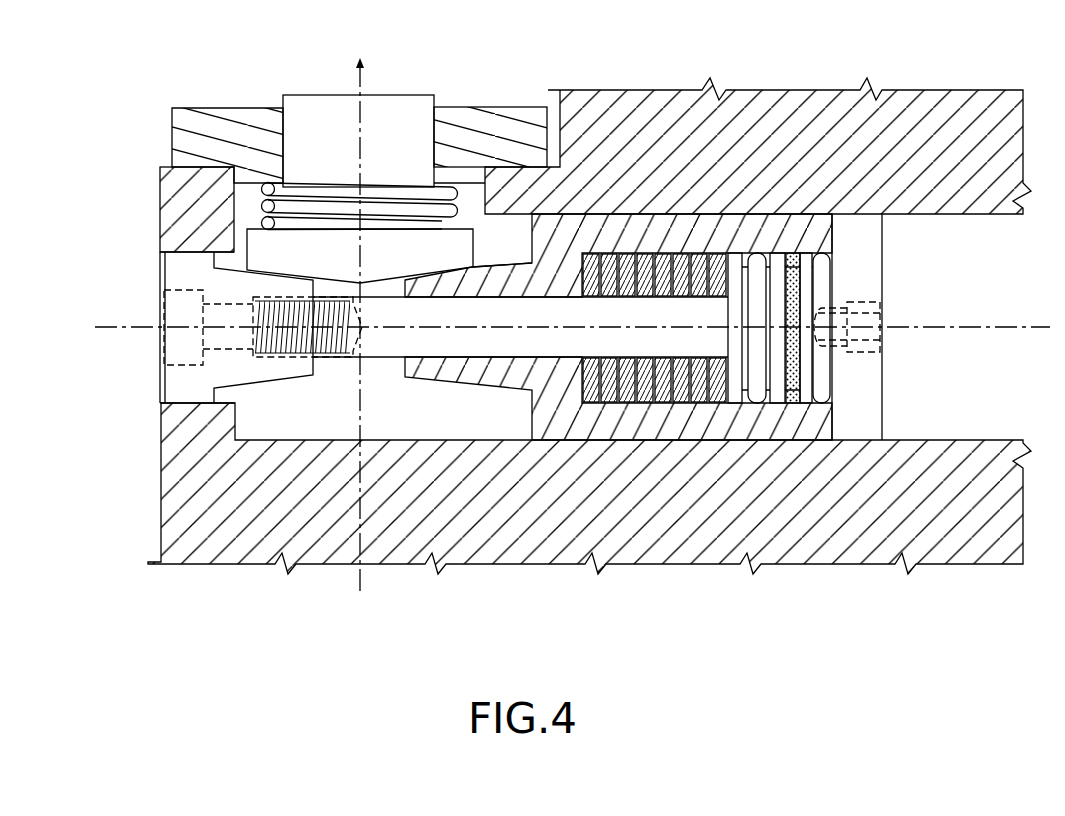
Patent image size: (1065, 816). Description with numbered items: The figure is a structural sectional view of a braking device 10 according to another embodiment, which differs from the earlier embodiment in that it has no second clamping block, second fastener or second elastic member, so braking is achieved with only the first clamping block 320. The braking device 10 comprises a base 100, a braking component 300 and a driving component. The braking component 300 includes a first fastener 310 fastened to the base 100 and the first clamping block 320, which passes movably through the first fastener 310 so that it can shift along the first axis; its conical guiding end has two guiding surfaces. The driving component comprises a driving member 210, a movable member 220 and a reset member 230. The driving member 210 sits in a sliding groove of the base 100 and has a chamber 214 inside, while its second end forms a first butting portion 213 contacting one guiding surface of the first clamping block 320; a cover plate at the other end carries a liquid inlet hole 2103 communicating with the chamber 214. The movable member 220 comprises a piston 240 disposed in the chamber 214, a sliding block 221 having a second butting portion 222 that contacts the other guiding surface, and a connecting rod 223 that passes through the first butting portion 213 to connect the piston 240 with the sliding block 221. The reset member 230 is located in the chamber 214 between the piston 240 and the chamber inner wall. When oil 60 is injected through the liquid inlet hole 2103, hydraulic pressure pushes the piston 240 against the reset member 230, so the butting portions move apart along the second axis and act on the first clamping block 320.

The base 100 is at (950, 88).
The braking device 10 is at (115, 150).
The braking component 300 is at (158, 111).
The first fastener 310 is at (456, 113).
The first clamping block 320 is at (398, 107).
The movable member 220 is at (150, 257).
The sliding block 221 is at (175, 392).
The second butting portion 222 is at (302, 372).
The connecting rod 223 is at (507, 312).
The first butting portion 213 is at (462, 373).
The reset member 230 is at (601, 362).
The piston 240 is at (733, 309).
The driving member 210 is at (903, 243).
The oil 60 is at (815, 279).
The liquid inlet hole 2103 is at (868, 318).
The chamber 214 is at (800, 366).